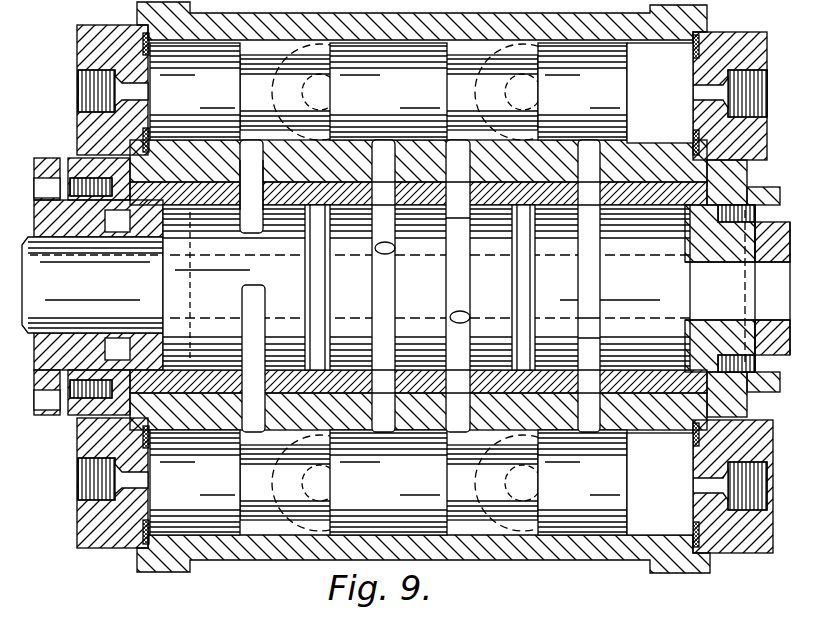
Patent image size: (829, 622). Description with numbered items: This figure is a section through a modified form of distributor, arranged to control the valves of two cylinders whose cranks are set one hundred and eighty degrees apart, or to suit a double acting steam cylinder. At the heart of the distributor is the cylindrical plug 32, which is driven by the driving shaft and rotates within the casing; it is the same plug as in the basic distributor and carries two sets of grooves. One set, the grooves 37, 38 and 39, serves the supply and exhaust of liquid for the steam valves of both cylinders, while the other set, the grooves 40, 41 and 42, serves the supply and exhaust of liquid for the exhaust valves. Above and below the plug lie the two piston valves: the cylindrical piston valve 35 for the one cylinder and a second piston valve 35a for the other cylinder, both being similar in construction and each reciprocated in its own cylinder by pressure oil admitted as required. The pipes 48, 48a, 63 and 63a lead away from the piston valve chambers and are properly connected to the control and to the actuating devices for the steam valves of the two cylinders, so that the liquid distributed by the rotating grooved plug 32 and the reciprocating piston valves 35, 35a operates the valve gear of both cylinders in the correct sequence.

The cylindrical plug 32 is at (610, 312).
The cylindrical piston valve 35 is at (388, 91).
The second piston valve 35a is at (388, 482).
The groove 37 is at (250, 294).
The groove 38 is at (315, 228).
The groove 39 is at (388, 352).
The groove 40 is at (463, 362).
The groove 41 is at (530, 363).
The groove 42 is at (592, 288).
The pipe 48 is at (195, 91).
The pipe 48a is at (284, 560).
The pipe 63 is at (573, 78).
The pipe 63a is at (527, 534).